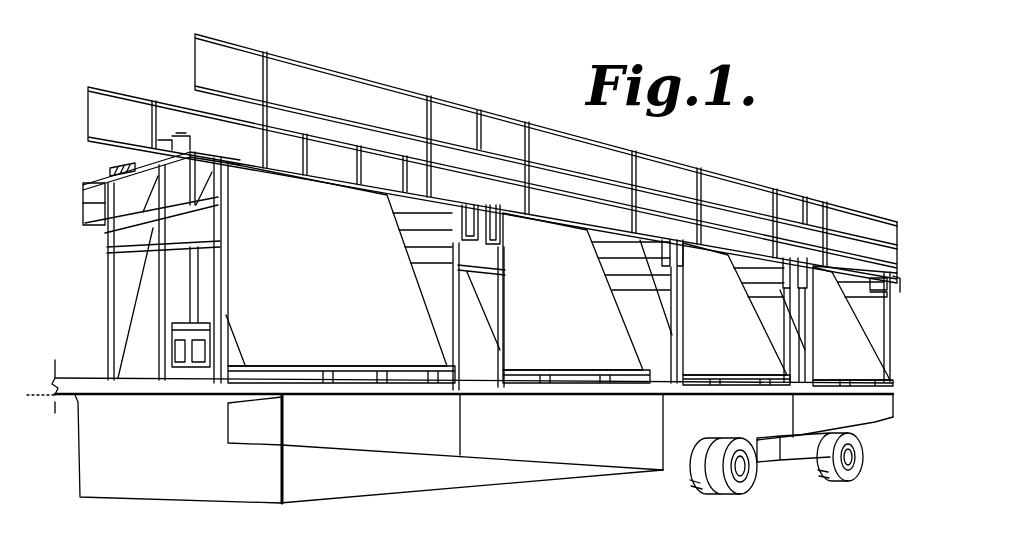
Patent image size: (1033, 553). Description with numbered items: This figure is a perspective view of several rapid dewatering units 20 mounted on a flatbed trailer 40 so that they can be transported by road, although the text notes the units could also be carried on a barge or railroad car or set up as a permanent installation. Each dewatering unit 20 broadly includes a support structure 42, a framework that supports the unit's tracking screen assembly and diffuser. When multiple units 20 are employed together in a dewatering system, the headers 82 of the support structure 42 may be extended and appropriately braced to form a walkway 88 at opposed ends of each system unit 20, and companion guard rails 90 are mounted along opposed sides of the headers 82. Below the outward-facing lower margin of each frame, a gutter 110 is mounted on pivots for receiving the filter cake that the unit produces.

The rapid dewatering unit 20 is at (303, 42).
The flatbed trailer 40 is at (152, 478).
The support structure 42 is at (99, 266).
The headers 82 is at (313, 178).
The walkway 88 is at (113, 165).
The guard rails 90 is at (385, 83).
The gutter 110 is at (303, 383).